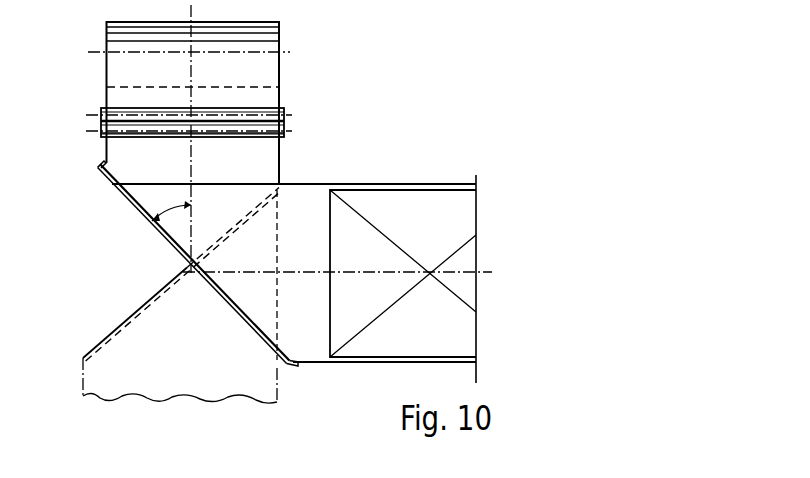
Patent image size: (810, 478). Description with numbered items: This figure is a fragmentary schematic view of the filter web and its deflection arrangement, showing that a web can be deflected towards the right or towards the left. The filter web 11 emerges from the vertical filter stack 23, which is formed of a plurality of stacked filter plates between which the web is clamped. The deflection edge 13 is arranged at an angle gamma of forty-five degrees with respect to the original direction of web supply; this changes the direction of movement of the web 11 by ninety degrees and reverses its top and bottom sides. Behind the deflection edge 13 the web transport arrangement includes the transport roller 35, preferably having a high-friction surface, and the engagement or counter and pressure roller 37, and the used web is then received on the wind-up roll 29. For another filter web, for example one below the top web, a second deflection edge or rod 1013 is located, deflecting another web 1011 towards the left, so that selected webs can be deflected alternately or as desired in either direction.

The wind-up rolls 29 is at (273, 76).
The engagement or counter and pressure roller 37 is at (284, 111).
The transport roller 35 is at (281, 138).
The deflection edge 13 is at (113, 183).
The second deflection edge 1013 is at (118, 322).
The another web 1011 is at (208, 391).
The filter web 11 is at (314, 366).
The filter stack 23 is at (436, 233).